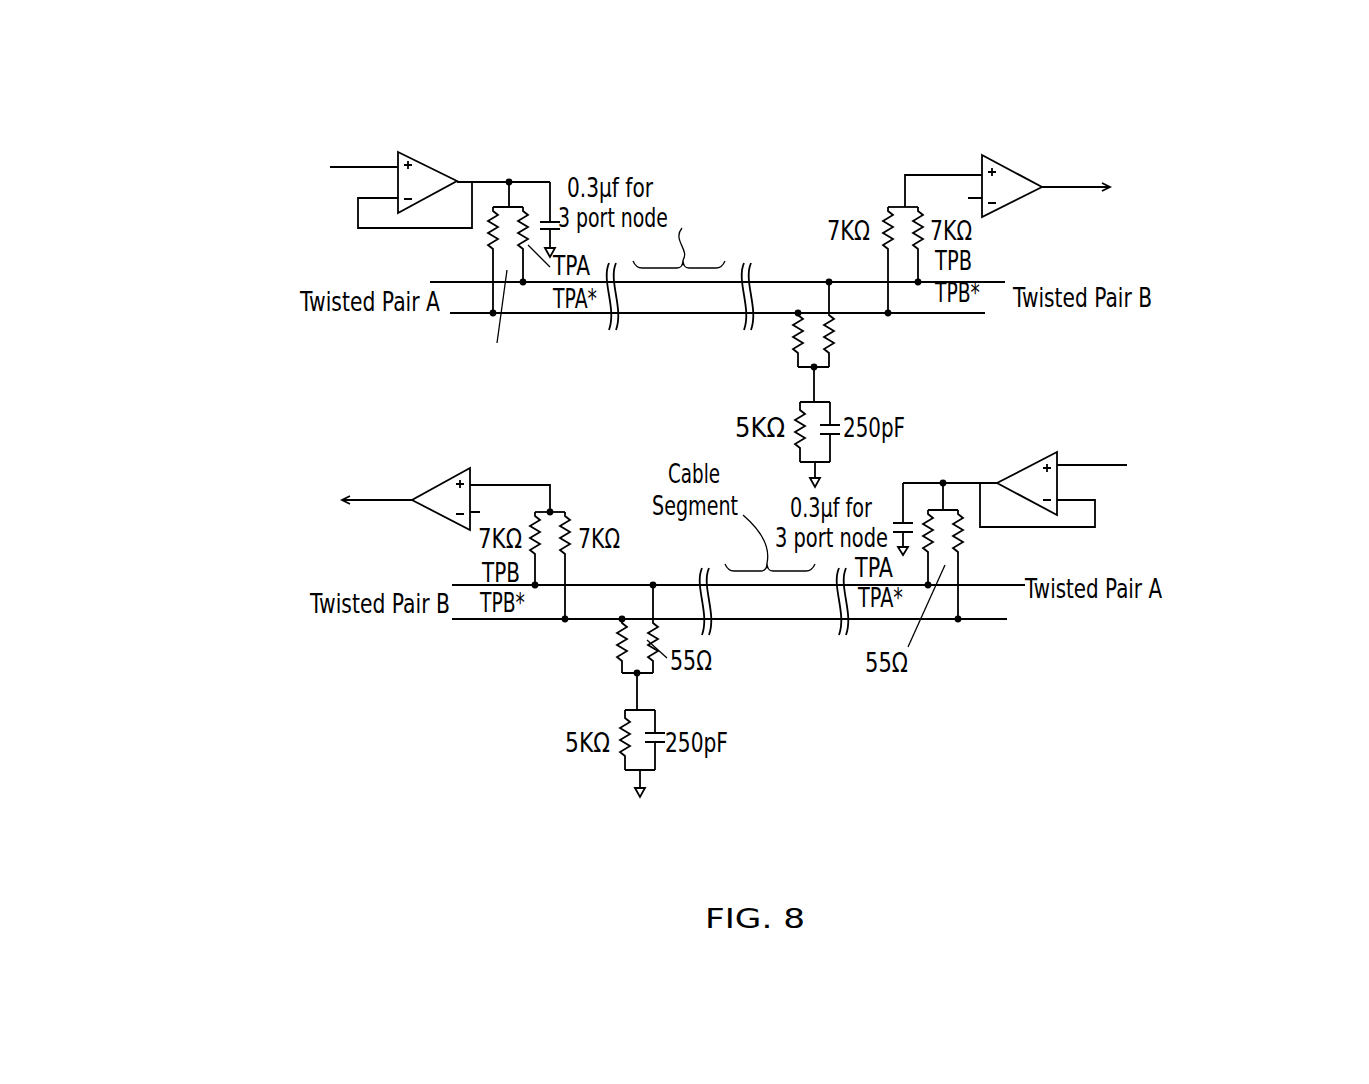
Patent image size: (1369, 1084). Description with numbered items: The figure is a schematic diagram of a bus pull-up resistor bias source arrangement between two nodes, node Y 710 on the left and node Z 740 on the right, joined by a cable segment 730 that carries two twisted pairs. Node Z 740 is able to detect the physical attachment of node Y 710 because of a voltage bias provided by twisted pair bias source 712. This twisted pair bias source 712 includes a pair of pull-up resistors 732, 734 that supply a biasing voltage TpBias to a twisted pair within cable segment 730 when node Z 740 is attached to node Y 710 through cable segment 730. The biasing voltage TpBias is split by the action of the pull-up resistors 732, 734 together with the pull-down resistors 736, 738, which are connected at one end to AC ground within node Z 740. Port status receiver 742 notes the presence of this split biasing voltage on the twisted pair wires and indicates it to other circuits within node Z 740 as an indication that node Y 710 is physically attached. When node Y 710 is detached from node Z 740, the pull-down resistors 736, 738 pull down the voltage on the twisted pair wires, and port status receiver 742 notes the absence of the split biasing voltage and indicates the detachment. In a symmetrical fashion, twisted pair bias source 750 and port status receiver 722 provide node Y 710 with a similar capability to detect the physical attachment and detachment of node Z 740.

The node Y 710 is at (412, 805).
The twisted pair bias source 712 is at (158, 162).
The port status receiver 722 is at (163, 475).
The cable segment 730 is at (760, 175).
The pull-up resistor 732 is at (487, 247).
The pull-up resistor 734 is at (517, 255).
The pull-down resistor 736 is at (790, 358).
The pull-down resistor 738 is at (835, 353).
The node Z 740 is at (1082, 800).
The port status receiver 742 is at (1278, 143).
The twisted pair bias source 750 is at (1258, 427).